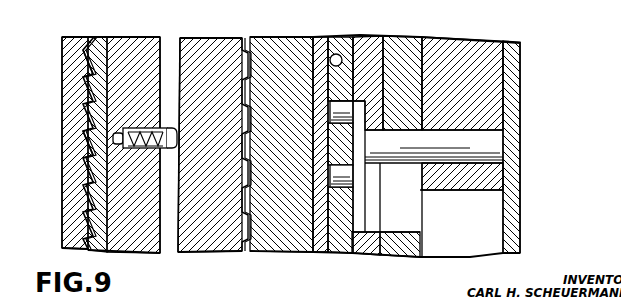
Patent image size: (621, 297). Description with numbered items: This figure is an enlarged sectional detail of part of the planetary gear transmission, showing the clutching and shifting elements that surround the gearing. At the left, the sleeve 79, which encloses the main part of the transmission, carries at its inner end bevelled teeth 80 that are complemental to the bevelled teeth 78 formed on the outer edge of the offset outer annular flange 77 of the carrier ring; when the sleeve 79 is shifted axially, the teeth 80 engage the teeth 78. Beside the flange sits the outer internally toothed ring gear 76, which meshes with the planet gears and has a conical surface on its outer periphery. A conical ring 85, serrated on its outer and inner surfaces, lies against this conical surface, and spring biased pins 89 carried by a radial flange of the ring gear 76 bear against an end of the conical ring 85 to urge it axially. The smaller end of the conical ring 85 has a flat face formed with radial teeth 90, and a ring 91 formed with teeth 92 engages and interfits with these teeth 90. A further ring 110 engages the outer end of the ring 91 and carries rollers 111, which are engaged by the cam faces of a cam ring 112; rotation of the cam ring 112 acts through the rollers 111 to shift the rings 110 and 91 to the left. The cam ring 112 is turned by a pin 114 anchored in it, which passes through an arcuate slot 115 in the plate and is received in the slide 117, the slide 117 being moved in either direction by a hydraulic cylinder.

The ring gear 76 is at (143, 45).
The outer annular flange 77 is at (100, 43).
The bevelled teeth 78 is at (89, 62).
The sleeve 79 is at (72, 107).
The bevelled teeth 80 is at (83, 133).
The conical ring 85 is at (198, 45).
The spring biased pins 89 is at (168, 150).
The radial teeth 90 is at (245, 44).
The ring 91 is at (296, 43).
The teeth 92 is at (252, 44).
The ring 110 is at (318, 238).
The rollers 111 is at (338, 88).
The cam ring 112 is at (342, 246).
The pin 114 is at (478, 143).
The arcuate slot 115 is at (407, 198).
The slide 117 is at (493, 94).